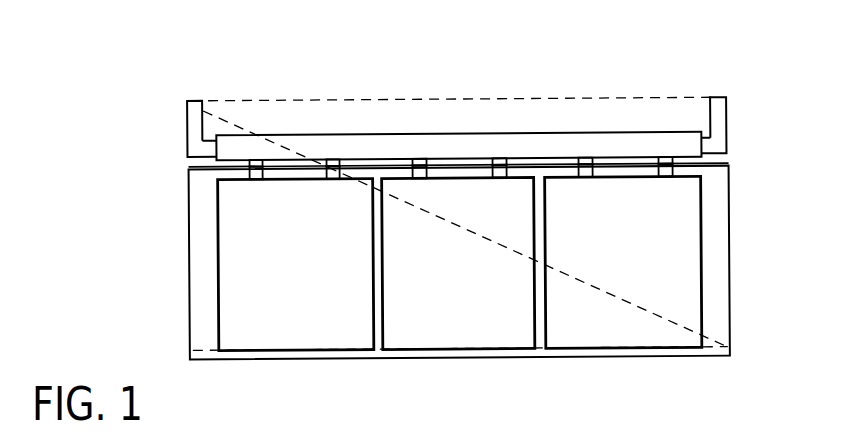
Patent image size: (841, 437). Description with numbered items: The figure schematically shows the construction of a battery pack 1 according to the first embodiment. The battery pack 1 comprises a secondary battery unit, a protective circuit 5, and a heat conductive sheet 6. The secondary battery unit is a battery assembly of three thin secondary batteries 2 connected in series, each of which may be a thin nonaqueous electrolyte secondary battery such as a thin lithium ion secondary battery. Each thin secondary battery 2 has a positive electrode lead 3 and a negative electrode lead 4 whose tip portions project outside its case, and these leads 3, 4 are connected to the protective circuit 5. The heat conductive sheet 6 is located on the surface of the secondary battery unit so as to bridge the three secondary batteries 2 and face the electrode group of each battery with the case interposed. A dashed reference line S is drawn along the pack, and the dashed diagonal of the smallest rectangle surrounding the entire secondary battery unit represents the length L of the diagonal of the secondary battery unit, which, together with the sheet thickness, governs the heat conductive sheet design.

The battery pack 1 is at (439, 86).
The thin secondary battery 2 is at (296, 339).
The positive electrode lead 3 is at (342, 167).
The negative electrode lead 4 is at (259, 166).
The protective circuit 5 is at (615, 143).
The heat conductive sheet 6 is at (718, 260).
The reference plane S is at (540, 98).
The length of the diagonal L is at (645, 314).